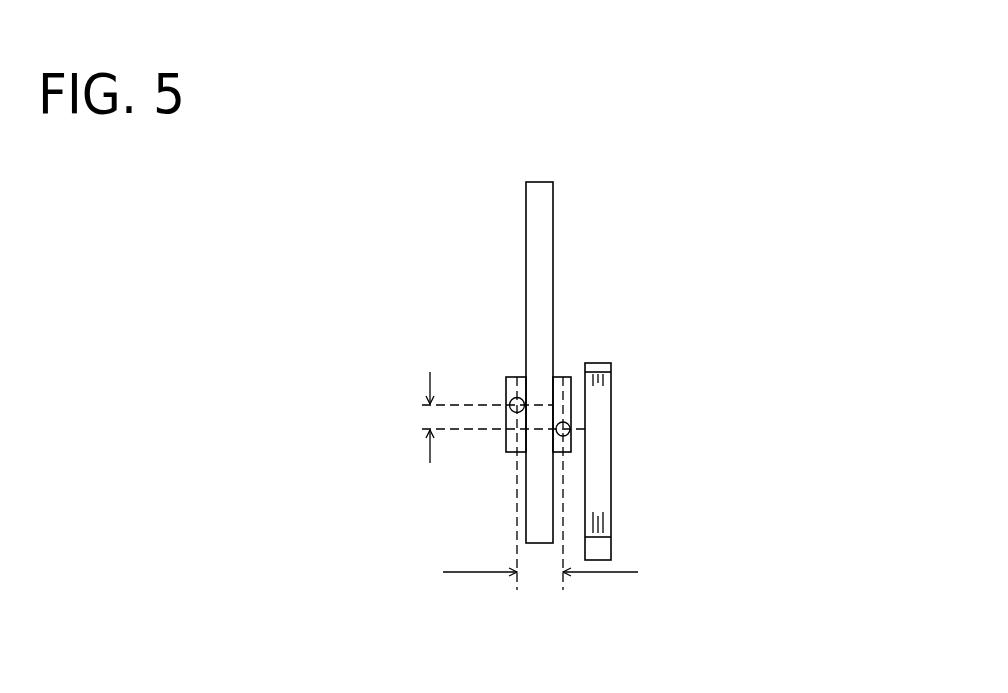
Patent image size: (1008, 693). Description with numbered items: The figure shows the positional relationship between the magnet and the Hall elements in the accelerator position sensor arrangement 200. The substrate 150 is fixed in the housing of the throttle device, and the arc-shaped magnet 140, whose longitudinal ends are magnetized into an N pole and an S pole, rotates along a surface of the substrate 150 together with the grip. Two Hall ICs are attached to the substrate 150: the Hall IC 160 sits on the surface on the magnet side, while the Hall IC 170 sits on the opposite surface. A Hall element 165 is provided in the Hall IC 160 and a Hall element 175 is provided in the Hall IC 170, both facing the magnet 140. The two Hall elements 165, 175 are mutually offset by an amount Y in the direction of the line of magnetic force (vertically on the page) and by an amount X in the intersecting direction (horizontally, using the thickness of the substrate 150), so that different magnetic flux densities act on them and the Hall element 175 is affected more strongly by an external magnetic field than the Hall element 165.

The reed switch assembly 200 is at (428, 208).
The substrate 150 is at (553, 222).
The Hall IC 160 is at (561, 388).
The Hall element 165 is at (585, 429).
The Hall IC 170 is at (508, 443).
The Hall element 175 is at (513, 399).
The magnet 140 is at (611, 487).